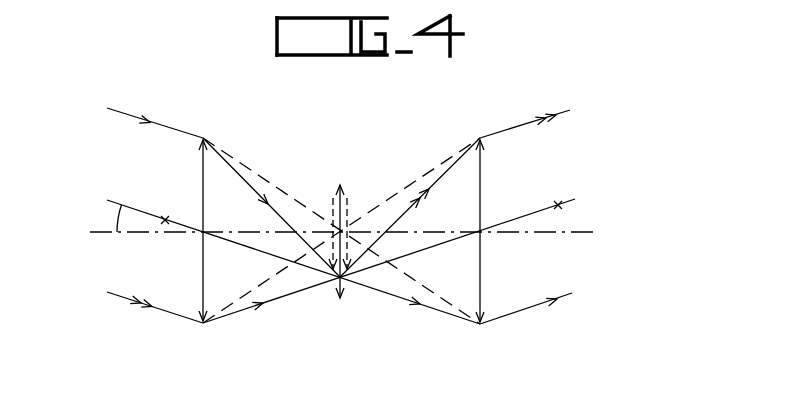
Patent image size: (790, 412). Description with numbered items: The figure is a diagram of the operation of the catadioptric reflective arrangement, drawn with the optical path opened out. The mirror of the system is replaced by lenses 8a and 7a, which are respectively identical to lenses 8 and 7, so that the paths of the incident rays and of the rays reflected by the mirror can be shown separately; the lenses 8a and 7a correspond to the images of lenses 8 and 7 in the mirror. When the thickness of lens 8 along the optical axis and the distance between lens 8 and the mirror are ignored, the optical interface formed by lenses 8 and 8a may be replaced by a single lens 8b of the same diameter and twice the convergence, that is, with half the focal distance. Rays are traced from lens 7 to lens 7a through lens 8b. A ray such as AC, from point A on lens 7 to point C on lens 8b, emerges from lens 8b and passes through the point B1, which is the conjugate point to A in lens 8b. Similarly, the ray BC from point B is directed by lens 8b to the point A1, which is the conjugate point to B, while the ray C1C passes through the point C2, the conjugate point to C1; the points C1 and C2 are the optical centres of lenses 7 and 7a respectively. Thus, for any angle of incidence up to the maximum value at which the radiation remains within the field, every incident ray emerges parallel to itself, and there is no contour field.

The lens 7 is at (198, 178).
The lens 7a is at (481, 184).
The lens 8 is at (331, 202).
The lens 8a is at (348, 202).
The lens 8b is at (339, 183).
The point A is at (205, 118).
The point B is at (203, 325).
The conjugate point A1 is at (478, 138).
The conjugate point B1 is at (480, 326).
The point C is at (343, 282).
The optical centre C1 is at (221, 218).
The optical centre C2 is at (457, 218).